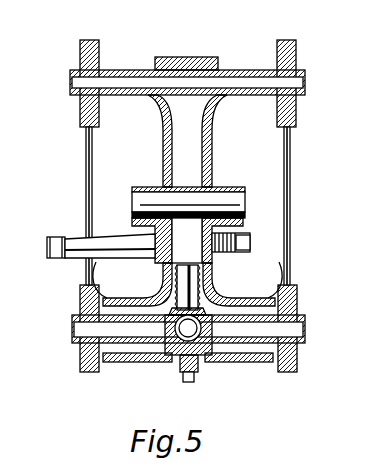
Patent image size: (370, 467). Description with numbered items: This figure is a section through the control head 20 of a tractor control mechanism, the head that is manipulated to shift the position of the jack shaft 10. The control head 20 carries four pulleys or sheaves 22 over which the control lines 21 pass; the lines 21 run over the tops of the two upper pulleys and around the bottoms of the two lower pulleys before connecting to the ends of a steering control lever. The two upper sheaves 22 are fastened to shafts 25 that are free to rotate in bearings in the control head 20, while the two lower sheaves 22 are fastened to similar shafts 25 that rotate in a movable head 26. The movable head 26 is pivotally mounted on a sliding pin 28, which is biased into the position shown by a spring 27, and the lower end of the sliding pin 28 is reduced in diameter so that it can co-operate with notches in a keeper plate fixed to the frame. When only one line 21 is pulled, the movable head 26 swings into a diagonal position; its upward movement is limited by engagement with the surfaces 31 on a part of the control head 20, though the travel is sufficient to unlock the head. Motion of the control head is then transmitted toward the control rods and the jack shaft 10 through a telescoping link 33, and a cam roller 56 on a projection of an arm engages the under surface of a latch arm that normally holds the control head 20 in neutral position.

The jack shaft 10 is at (187, 410).
The control head 20 is at (238, 70).
The control lines 21 is at (85, 200).
The pulleys or sheaves 22 is at (84, 42).
The shafts 25 is at (126, 71).
The movable head 26 is at (255, 345).
The spring 27 is at (200, 290).
The sliding pin 28 is at (200, 376).
The surfaces 31 is at (124, 298).
The telescoping link 33 is at (247, 236).
The cam roller 56 is at (66, 256).